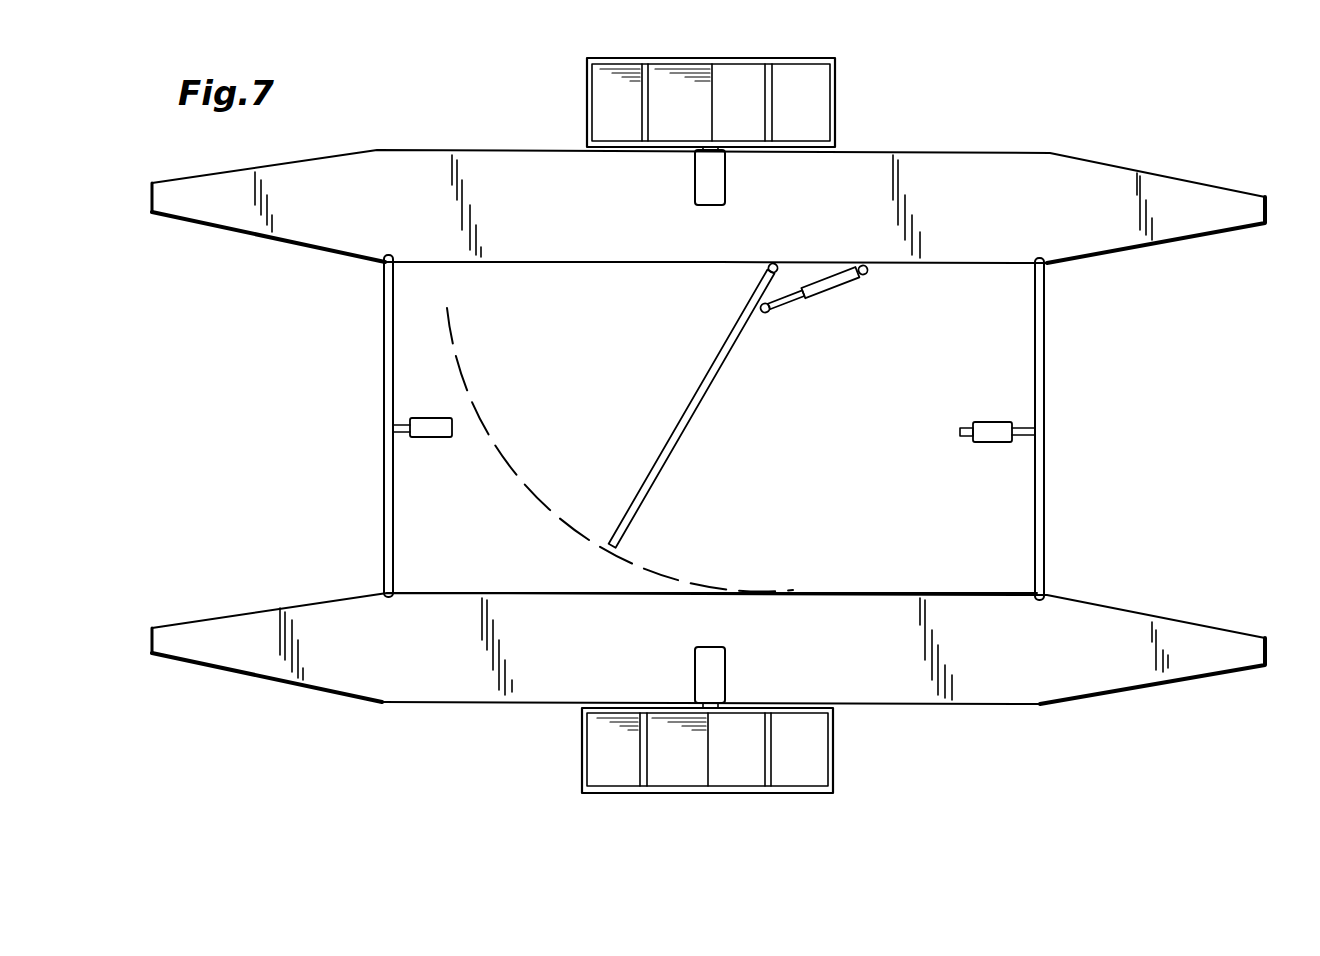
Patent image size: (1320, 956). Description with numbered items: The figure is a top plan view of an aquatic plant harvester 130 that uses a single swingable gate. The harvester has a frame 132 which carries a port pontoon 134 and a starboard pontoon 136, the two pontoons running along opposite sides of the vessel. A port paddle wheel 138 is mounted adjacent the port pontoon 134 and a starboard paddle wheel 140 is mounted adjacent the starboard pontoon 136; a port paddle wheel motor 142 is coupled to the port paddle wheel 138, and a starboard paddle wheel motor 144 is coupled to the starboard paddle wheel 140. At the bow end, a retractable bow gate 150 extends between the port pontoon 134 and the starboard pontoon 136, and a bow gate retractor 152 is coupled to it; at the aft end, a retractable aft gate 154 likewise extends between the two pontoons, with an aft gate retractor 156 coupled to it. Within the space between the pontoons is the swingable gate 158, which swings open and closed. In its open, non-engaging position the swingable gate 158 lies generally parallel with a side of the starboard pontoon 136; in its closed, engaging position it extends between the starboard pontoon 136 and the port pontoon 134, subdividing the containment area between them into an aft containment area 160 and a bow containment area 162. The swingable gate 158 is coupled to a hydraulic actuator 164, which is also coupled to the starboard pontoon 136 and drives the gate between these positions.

The aquatic plant harvester 130 is at (1168, 136).
The frame 132 is at (374, 491).
The port pontoon 134 is at (248, 665).
The starboard pontoon 136 is at (286, 246).
The port paddle wheel 138 is at (743, 770).
The starboard paddle wheel 140 is at (837, 72).
The port paddle wheel motor 142 is at (724, 668).
The starboard paddle wheel motor 144 is at (725, 185).
The retractable bow gate 150 is at (383, 378).
The bow gate retractor 152 is at (433, 438).
The retractable aft gate 154 is at (1046, 332).
The aft gate retractor 156 is at (985, 442).
The swingable gate 158 is at (665, 452).
The aft containment area 160 is at (987, 281).
The bow containment area 162 is at (530, 275).
The hydraulic actuator 164 is at (820, 297).